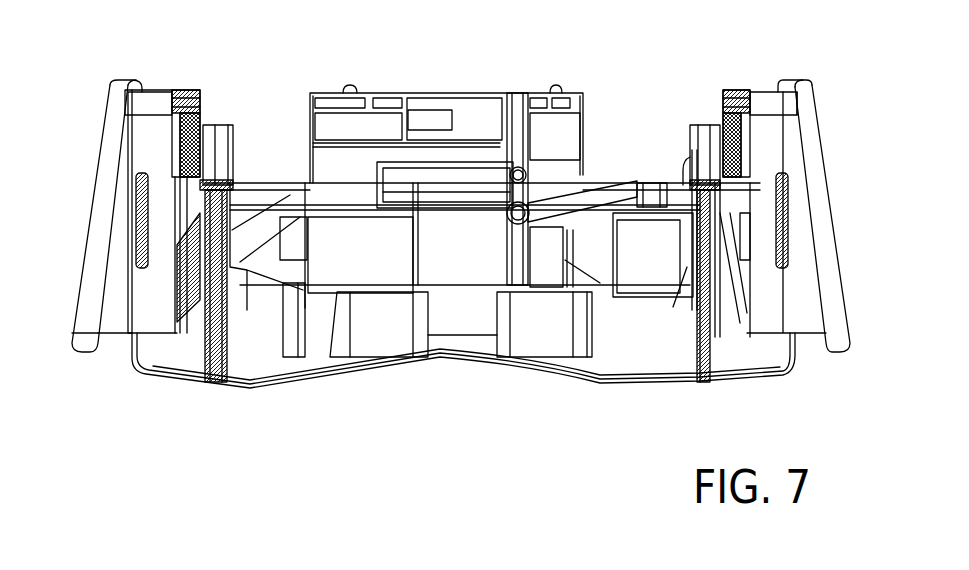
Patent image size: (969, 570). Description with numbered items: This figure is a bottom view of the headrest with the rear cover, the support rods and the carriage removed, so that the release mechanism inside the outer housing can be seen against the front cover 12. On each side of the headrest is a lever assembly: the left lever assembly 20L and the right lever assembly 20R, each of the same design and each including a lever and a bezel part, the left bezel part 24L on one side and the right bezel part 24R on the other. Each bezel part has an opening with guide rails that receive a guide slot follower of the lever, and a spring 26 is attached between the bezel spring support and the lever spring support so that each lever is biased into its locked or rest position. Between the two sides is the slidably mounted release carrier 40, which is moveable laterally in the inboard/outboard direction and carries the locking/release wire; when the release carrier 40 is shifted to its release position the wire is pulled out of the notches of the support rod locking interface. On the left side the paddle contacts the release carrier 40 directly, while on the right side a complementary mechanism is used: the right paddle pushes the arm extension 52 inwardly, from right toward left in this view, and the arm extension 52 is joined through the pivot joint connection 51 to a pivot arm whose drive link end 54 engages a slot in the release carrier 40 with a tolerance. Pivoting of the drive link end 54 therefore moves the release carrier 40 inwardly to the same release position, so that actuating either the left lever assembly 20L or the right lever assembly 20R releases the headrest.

The front cover 12 is at (283, 388).
The left lever assembly 20L is at (236, 113).
The right lever assembly 20R is at (712, 105).
The left bezel part 24L is at (108, 110).
The right bezel part 24R is at (813, 140).
The spring 26 is at (186, 92).
The release carrier 40 is at (442, 92).
The pivot joint connection 51 is at (507, 216).
The arm extension 52 is at (600, 195).
The drive link end 54 is at (523, 157).